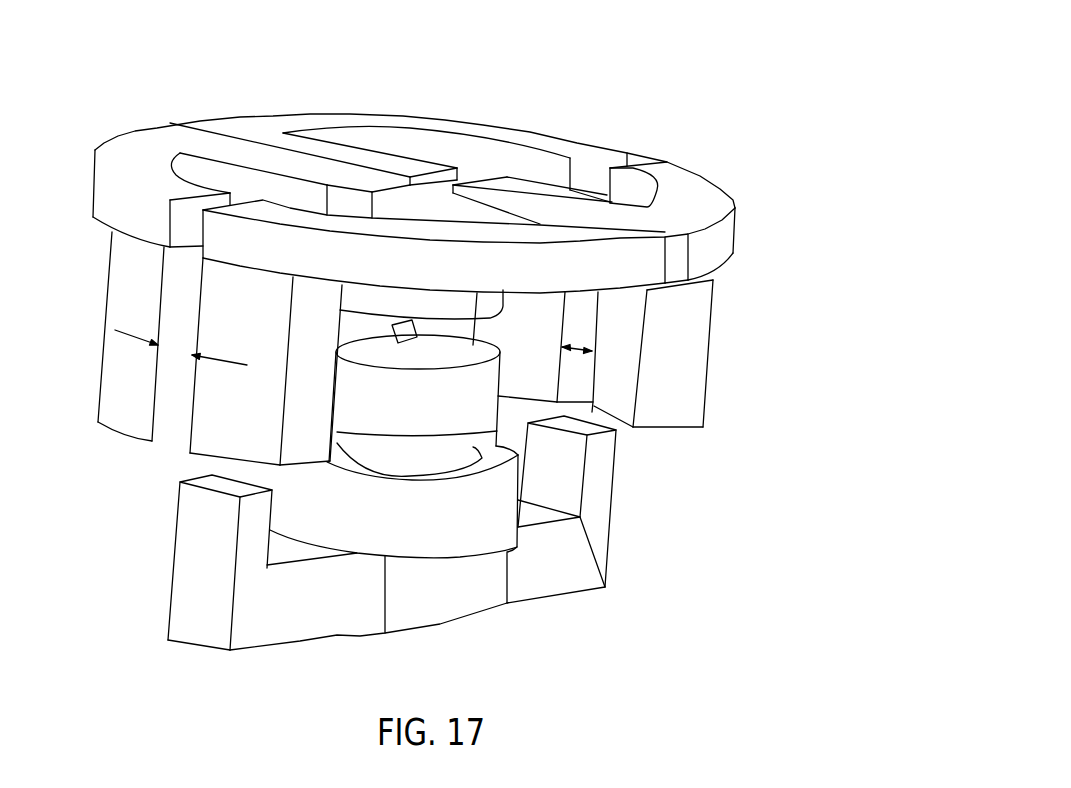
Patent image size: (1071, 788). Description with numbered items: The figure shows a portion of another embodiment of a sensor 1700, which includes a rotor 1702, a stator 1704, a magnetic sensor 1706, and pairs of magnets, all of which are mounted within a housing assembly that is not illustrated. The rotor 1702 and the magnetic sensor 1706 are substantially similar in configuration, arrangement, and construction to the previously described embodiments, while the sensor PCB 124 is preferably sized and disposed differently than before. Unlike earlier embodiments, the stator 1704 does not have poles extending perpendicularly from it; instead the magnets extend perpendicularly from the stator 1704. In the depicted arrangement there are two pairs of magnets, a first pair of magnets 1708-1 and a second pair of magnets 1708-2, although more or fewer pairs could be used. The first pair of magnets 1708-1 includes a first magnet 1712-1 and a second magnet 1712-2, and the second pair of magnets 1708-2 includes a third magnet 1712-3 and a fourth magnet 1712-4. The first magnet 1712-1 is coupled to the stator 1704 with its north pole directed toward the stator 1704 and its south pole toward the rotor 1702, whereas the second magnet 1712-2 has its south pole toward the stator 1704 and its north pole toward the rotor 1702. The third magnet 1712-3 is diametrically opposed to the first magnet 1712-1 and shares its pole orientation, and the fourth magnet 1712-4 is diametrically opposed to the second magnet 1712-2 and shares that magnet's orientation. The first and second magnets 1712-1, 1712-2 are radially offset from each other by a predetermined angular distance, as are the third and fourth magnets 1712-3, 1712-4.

The sensor 1700 is at (435, 330).
The stator 1704 is at (441, 194).
The magnetic sensor 1706 is at (398, 322).
The first pair of magnets 1708-1 is at (290, 476).
The second pair of magnets 1708-2 is at (660, 348).
The first magnet 1712-1 is at (266, 361).
The second magnet 1712-2 is at (108, 318).
The third magnet 1712-3 is at (535, 352).
The fourth magnet 1712-4 is at (703, 373).
The sensor PCB 124 is at (416, 376).
The rotor 1702 is at (453, 533).